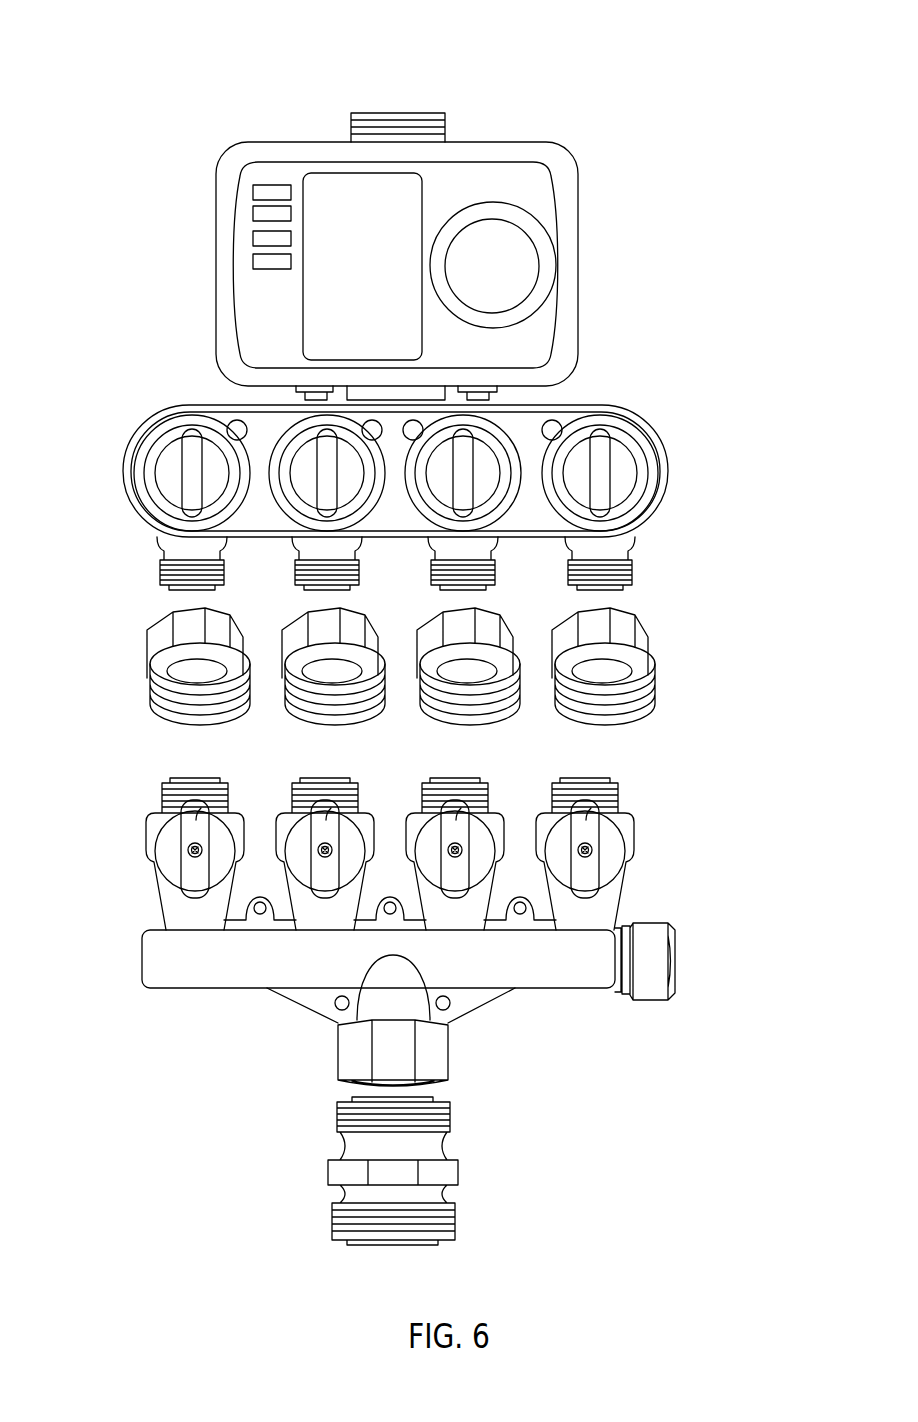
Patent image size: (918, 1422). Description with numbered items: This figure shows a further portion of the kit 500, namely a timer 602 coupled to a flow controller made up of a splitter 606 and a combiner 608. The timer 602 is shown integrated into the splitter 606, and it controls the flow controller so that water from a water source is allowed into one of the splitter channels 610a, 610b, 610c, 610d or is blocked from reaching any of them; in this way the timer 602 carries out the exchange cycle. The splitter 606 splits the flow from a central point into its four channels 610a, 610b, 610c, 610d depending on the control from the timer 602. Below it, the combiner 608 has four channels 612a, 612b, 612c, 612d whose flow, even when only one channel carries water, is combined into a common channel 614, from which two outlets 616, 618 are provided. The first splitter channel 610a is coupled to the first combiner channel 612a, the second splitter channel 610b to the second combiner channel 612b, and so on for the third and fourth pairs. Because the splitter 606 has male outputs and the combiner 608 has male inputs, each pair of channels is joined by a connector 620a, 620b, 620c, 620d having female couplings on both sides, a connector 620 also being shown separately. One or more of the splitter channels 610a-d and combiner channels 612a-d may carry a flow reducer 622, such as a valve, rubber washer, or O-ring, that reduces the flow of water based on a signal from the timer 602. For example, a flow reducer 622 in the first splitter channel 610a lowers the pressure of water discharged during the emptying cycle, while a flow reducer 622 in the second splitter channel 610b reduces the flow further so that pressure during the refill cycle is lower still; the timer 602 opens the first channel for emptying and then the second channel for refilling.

The kit 500 is at (418, 630).
The timer 602 is at (479, 256).
The splitter 606 is at (685, 515).
The combiner 608 is at (418, 945).
The first splitter channel 610a is at (159, 553).
The second splitter channel 610b is at (294, 553).
The third splitter channel 610c is at (430, 553).
The fourth splitter channel 610d is at (565, 553).
The first combiner channel 612a is at (173, 913).
The second combiner channel 612b is at (307, 917).
The third combiner channel 612c is at (475, 917).
The fourth combiner channel 612d is at (603, 910).
The common channel 614 is at (333, 960).
The outlet 616 is at (437, 1060).
The outlet 618 is at (694, 958).
The connector 620 is at (452, 1176).
The connector 620a is at (160, 652).
The connector 620b is at (295, 652).
The connector 620c is at (430, 652).
The connector 620d is at (565, 652).
The flow reducer 622 is at (327, 445).